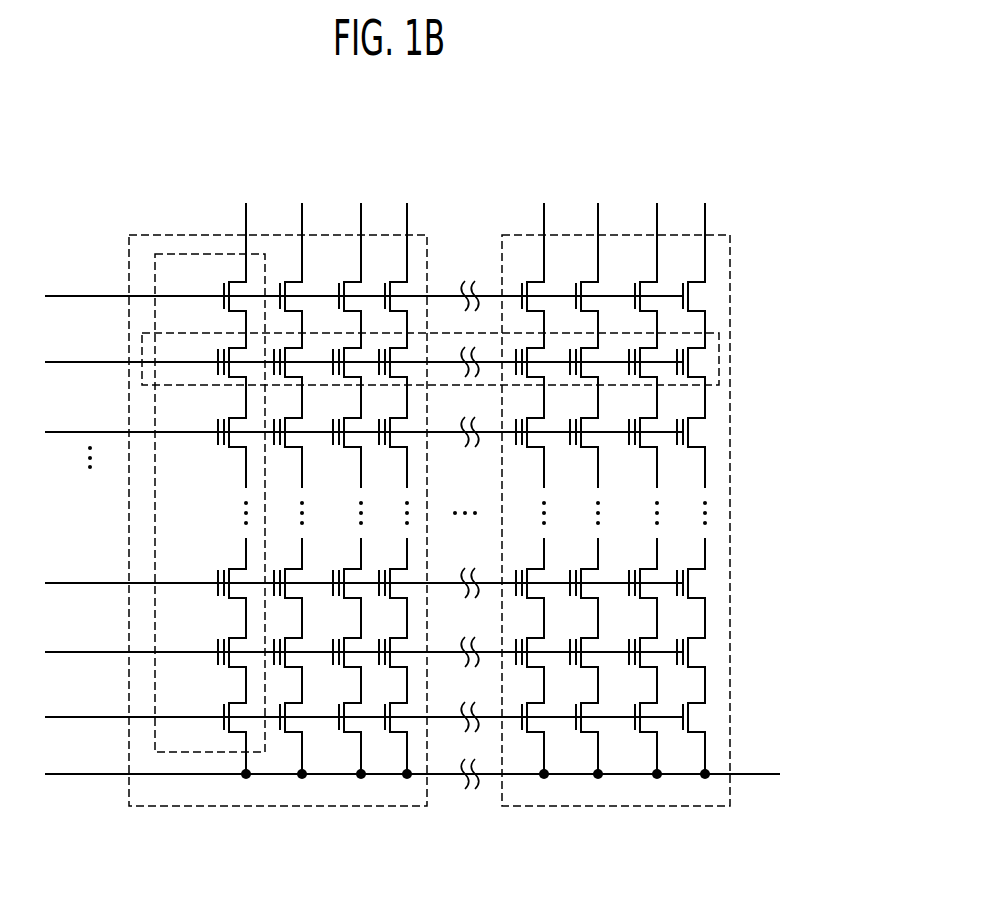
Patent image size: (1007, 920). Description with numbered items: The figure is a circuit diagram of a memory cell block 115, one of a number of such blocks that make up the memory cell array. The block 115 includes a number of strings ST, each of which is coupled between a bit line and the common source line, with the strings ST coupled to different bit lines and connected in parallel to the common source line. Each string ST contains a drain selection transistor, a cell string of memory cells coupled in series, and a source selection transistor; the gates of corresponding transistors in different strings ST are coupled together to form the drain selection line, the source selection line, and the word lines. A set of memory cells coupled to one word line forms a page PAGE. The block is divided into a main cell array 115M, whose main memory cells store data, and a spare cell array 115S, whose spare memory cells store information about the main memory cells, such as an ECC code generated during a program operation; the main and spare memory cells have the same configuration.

The memory cell block 115 is at (412, 545).
The main cell array 115M is at (145, 235).
The spare cell array 115S is at (730, 237).
The string ST is at (217, 254).
The page PAGE is at (719, 366).